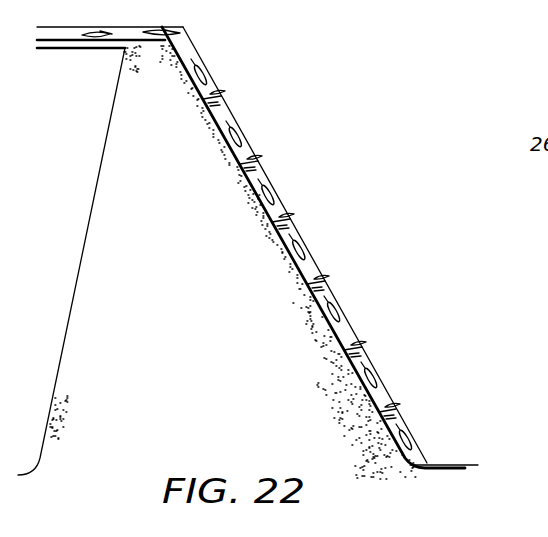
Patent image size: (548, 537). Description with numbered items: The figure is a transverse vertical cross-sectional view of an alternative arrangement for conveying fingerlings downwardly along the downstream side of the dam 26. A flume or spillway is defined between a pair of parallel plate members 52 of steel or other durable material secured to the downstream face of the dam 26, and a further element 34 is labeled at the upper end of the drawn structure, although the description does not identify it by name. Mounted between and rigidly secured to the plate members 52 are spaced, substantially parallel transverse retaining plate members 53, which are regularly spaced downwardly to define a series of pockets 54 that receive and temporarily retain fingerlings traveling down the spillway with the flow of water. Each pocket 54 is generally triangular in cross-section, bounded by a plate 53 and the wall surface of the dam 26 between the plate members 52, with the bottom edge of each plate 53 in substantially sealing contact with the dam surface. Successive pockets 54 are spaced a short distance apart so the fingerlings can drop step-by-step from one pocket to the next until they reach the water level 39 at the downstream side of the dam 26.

The dam 26 is at (122, 185).
The top wall 34 is at (152, 45).
The water level 39 is at (443, 465).
The parallel plate members 52 is at (208, 72).
The transverse retaining plate members 53 is at (227, 117).
The pockets 54 is at (273, 236).